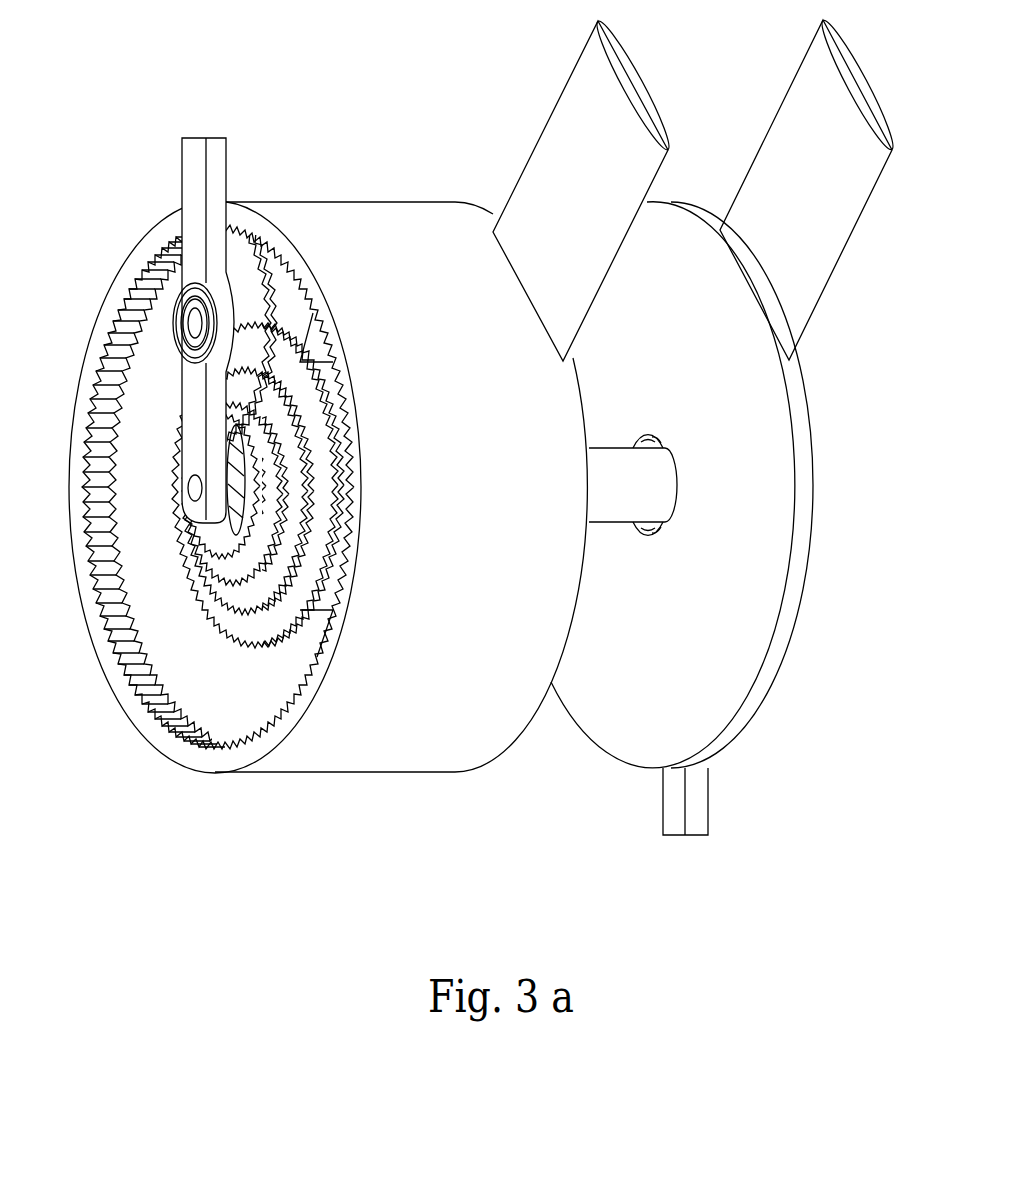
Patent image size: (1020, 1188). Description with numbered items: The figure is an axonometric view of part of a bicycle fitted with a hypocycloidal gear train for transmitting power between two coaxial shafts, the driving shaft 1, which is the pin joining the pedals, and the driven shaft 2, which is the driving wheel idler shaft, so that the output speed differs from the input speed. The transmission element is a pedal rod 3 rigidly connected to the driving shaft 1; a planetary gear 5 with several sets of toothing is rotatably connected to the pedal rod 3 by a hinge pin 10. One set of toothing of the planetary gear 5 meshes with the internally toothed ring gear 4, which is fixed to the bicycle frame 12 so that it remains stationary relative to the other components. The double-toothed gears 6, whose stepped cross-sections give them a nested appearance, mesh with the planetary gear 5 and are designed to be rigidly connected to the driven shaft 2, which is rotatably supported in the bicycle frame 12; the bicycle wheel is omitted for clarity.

The driving shaft 1 is at (196, 489).
The driven shaft 2 is at (637, 498).
The pedal rod 3 is at (213, 172).
The ring gear 4 is at (162, 242).
The planetary gear 5 is at (237, 263).
The gears 6 is at (217, 545).
The hinge pin 10 is at (193, 322).
The bicycle frame 12 is at (597, 201).